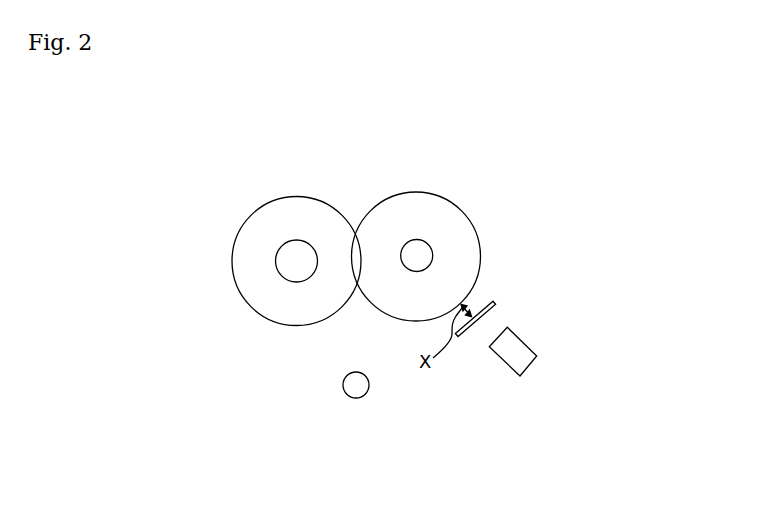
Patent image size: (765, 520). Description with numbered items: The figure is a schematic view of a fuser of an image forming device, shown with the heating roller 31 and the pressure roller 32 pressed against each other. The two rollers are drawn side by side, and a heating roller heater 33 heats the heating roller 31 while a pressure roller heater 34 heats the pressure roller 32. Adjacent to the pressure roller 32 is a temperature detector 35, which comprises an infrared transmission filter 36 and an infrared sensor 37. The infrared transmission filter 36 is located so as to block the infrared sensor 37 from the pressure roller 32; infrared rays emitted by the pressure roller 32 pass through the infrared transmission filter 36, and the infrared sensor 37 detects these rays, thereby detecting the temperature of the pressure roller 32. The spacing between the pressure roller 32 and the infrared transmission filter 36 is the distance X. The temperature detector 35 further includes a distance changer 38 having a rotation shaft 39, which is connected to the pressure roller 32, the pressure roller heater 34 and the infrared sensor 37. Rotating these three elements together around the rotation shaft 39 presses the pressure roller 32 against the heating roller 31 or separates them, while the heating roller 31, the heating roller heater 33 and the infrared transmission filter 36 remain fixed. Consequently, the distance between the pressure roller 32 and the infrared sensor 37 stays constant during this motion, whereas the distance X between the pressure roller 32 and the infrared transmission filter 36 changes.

The heating roller 31 is at (273, 202).
The pressure roller 32 is at (449, 200).
The heating roller heater 33 is at (276, 262).
The pressure roller heater 34 is at (432, 246).
The temperature detector 35 is at (566, 314).
The infrared transmission filter 36 is at (495, 306).
The infrared sensor 37 is at (523, 340).
The distance changer 38 is at (404, 424).
The rotation shaft 39 is at (369, 386).